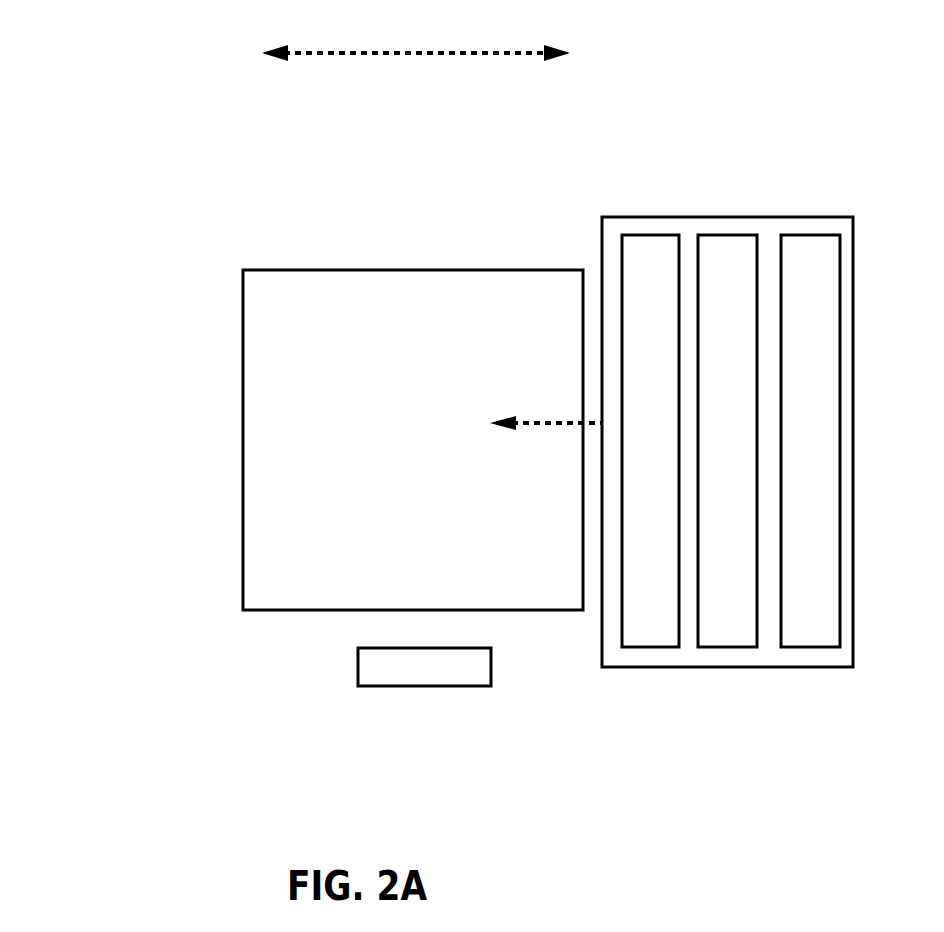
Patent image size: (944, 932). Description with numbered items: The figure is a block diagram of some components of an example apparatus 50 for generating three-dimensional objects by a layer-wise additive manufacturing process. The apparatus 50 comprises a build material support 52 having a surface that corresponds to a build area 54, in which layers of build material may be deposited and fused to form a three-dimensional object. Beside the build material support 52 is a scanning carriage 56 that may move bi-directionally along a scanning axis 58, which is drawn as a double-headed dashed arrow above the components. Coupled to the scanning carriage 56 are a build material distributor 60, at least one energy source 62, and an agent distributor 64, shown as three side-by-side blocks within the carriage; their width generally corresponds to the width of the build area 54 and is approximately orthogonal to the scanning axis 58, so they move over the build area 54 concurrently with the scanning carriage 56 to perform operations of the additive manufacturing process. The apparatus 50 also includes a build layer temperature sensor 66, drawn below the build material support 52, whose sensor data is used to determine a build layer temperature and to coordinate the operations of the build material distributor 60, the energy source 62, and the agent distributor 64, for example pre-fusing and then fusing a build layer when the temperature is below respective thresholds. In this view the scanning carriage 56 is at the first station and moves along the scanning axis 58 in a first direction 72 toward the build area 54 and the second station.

The apparatus 50 is at (86, 72).
The build material support 52 is at (243, 270).
The build area 54 is at (284, 588).
The scanning carriage 56 is at (601, 216).
The scanning axis 58 is at (416, 41).
The build material distributor 60 is at (664, 531).
The energy source 62 is at (742, 531).
The agent distributor 64 is at (819, 531).
The build layer temperature sensor 66 is at (439, 678).
The first direction 72 is at (546, 410).